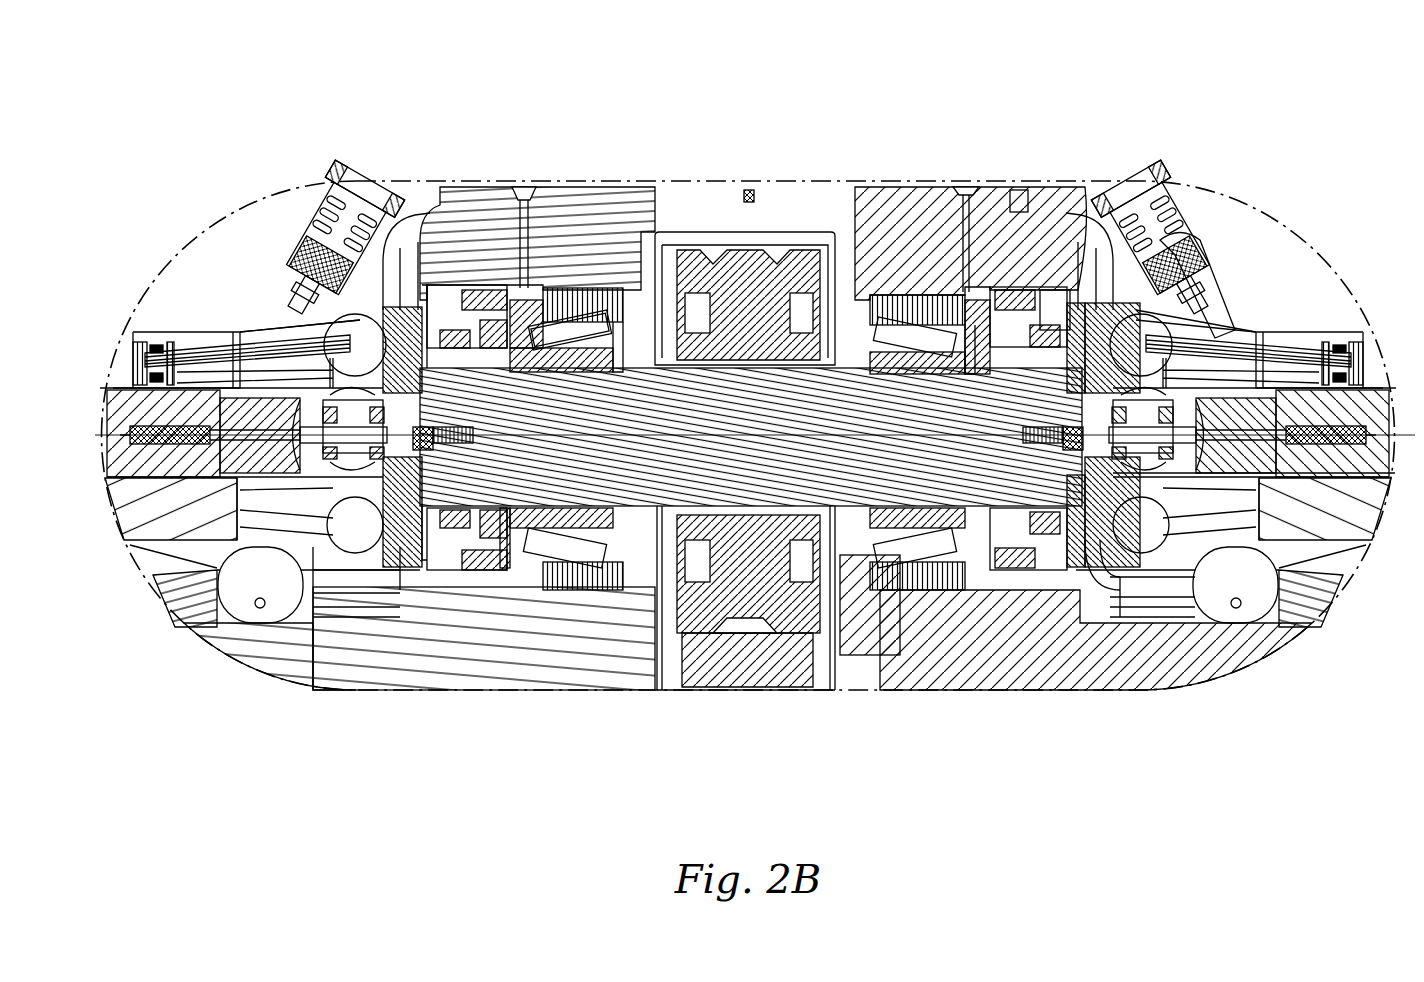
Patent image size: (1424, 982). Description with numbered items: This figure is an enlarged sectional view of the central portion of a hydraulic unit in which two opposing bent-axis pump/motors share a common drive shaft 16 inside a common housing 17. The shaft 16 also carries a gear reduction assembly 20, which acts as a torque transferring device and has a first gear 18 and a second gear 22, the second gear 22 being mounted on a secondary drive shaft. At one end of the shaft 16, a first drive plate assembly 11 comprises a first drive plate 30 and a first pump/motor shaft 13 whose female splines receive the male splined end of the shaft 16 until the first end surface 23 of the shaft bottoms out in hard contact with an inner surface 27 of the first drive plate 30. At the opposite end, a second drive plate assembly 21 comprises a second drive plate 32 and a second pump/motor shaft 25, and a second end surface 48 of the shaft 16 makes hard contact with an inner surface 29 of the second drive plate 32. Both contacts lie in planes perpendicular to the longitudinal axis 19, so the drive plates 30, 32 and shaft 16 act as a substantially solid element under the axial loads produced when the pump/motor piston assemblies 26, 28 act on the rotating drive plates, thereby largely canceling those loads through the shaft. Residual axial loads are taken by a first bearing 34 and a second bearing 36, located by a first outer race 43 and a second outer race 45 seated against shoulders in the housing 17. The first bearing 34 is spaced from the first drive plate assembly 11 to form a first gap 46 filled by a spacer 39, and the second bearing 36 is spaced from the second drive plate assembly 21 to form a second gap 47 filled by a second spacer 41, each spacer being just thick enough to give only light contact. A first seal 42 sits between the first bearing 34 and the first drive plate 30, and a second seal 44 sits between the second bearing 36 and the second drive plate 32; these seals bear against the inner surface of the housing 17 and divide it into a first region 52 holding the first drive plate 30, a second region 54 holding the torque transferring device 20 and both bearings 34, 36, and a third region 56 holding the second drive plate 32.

The first drive plate assembly 11 is at (437, 318).
The first pump/motor shaft 13 is at (432, 553).
The drive shaft 16 is at (663, 383).
The housing 17 is at (862, 287).
The first gear 18 is at (803, 602).
The longitudinal axis 19 is at (1405, 445).
The gear reduction assembly 20 is at (668, 632).
The second drive plate assembly 21 is at (1060, 317).
The second gear 22 is at (758, 653).
The first end surface 23 is at (360, 200).
The second pump/motor shaft 25 is at (1080, 600).
The pump/motor piston assembly 26 is at (335, 340).
The inner surface 27 is at (478, 560).
The pump/motor piston assembly 28 is at (1183, 305).
The inner surface 29 is at (1067, 383).
The first drive plate 30 is at (297, 278).
The second drive plate 32 is at (1067, 590).
The first bearing 34 is at (548, 330).
The second bearing 36 is at (913, 290).
The spacer 39 is at (528, 520).
The second spacer 41 is at (983, 358).
The first seal 42 is at (473, 300).
The first outer race 43 is at (553, 332).
The second seal 44 is at (1022, 590).
The second outer race 45 is at (920, 345).
The first gap 46 is at (512, 575).
The second gap 47 is at (990, 590).
The second end surface 48 is at (1157, 540).
The first region 52 is at (258, 215).
The second region 54 is at (750, 258).
The third region 56 is at (1213, 210).